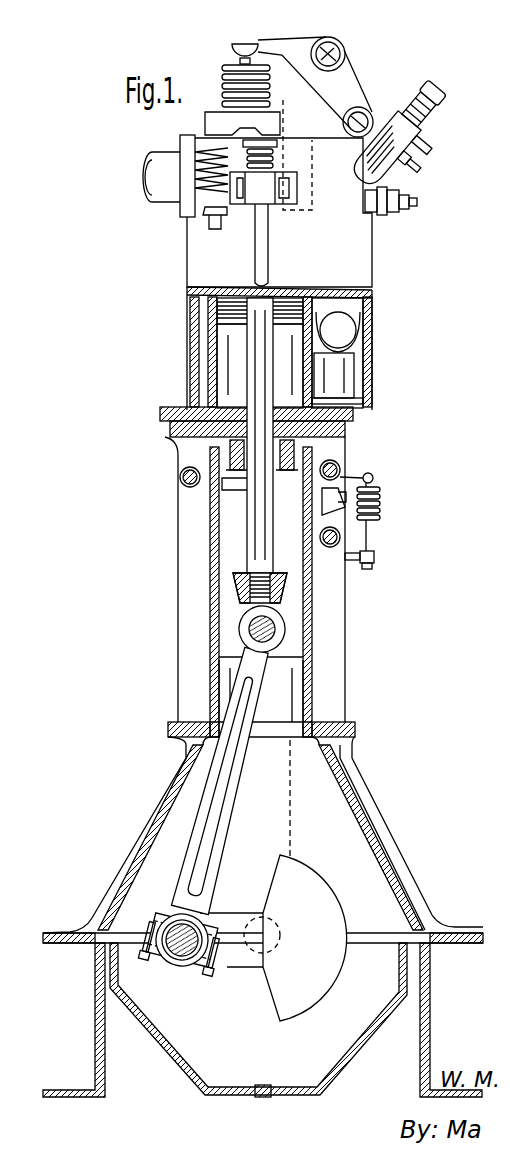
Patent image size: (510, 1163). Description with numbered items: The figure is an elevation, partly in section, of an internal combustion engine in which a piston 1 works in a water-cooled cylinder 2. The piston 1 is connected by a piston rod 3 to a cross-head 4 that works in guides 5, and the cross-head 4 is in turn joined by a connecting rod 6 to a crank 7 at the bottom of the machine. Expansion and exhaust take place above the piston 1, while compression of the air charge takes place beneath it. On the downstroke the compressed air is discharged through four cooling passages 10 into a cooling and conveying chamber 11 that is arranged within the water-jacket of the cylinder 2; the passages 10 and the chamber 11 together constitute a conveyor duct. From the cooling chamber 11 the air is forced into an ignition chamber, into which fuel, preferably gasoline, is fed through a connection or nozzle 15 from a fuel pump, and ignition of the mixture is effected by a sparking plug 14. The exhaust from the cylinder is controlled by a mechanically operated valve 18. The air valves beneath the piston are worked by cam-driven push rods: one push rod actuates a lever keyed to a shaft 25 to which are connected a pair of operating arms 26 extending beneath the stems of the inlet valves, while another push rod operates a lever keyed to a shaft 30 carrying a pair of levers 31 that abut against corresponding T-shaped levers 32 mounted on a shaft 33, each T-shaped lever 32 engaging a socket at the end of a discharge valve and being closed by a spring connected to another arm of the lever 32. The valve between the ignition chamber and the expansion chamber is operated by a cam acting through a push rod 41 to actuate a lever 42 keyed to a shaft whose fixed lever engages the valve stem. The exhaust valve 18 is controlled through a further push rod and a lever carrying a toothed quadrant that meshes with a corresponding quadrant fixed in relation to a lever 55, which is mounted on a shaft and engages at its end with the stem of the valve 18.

The piston 1 is at (217, 310).
The water-cooled cylinder 2 is at (227, 332).
The piston rod 3 is at (257, 553).
The cross-head 4 is at (304, 597).
The guides 5 is at (313, 642).
The connecting rod 6 is at (217, 822).
The crank 7 is at (238, 958).
The cooling passages 10 is at (347, 380).
The cooling and conveying chamber 11 is at (350, 332).
The sparking plug 14 is at (390, 194).
The connection or nozzle 15 is at (437, 92).
The mechanically operated valve 18 is at (233, 62).
The shaft 25 is at (182, 485).
The operating arms 26 is at (212, 492).
The shaft 30 is at (343, 537).
The levers 31 is at (323, 517).
The T-shaped lever 32 is at (348, 470).
The shaft 33 is at (343, 466).
The push rod 41 is at (270, 267).
The lever 42 is at (224, 125).
The lever 55 is at (282, 43).